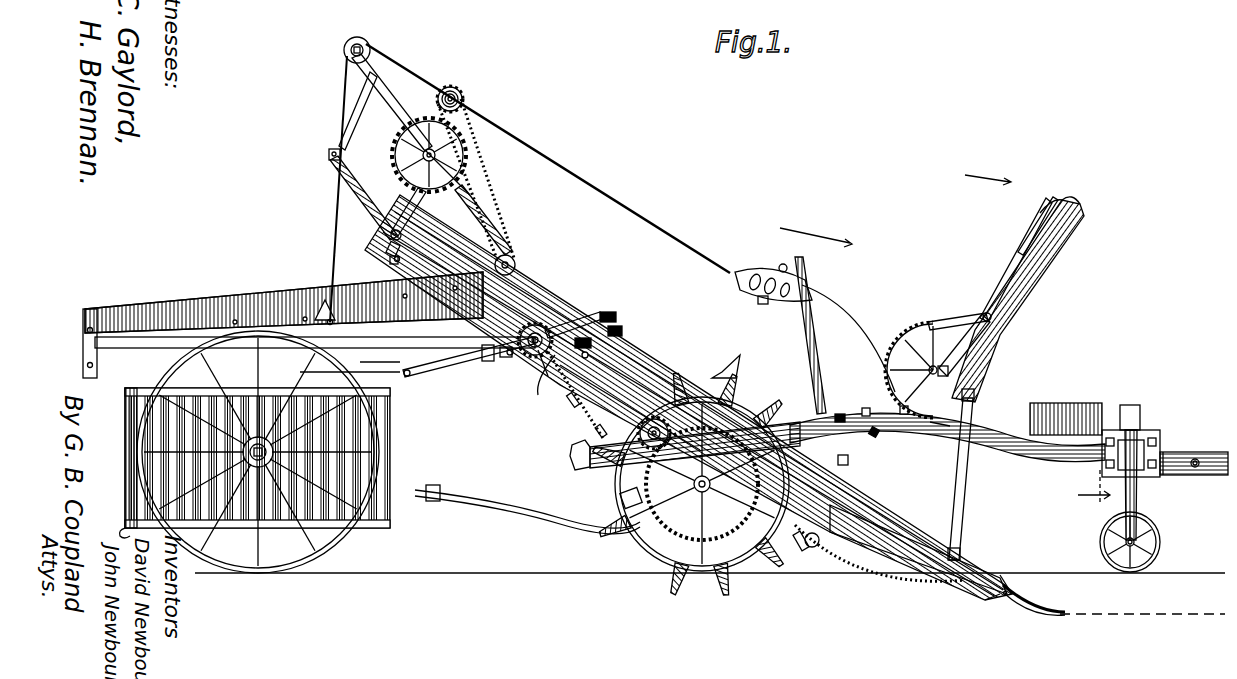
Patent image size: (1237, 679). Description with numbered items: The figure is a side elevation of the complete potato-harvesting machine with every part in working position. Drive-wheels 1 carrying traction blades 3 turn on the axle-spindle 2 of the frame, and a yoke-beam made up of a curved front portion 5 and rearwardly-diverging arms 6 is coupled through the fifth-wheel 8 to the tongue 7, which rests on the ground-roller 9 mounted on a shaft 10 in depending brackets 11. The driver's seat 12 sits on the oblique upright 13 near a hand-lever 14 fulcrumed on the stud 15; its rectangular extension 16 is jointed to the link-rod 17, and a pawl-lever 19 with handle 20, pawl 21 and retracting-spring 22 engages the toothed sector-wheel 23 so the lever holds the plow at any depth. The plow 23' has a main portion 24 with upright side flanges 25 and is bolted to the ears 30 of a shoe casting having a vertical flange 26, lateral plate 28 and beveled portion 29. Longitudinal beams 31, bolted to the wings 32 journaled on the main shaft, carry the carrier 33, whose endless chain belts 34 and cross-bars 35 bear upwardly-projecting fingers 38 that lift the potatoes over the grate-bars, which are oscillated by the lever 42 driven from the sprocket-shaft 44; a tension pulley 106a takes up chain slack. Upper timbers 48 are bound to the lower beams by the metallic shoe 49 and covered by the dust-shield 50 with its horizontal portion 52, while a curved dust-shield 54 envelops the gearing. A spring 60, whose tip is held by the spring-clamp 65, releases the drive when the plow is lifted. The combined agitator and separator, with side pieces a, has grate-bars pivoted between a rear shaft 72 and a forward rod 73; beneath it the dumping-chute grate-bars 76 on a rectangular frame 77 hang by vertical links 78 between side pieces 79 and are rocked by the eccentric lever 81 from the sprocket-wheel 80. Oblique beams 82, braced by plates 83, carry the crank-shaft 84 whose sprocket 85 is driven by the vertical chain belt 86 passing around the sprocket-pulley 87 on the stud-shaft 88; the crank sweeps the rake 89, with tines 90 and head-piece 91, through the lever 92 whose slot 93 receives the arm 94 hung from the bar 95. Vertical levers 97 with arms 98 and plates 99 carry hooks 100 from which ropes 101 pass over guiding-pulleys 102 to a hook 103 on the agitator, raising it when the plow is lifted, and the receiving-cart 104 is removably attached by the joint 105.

The drive-wheels 1 is at (738, 566).
The axle-spindle 2 is at (868, 410).
The traction blades or spurs 3 is at (746, 372).
The curved front portion 5 is at (935, 422).
The rearwardly-diverging arms or prongs 6 is at (808, 435).
The tongue 7 is at (1210, 452).
The fifth-wheel 8 is at (1138, 428).
The ground-roller 9 is at (1162, 540).
The shaft 10 is at (1118, 546).
The depending arms or brackets 11 is at (1138, 498).
The driver's seat 12 is at (760, 270).
The oblique upright 13 is at (854, 345).
The hand-lever 14 is at (1030, 262).
The stud or bracket 15 is at (975, 392).
The rigid rectangular extension 16 is at (962, 384).
The link-rod 17 is at (965, 487).
The pawl-lever 19 is at (1000, 268).
The handle 20 is at (1050, 204).
The pawl 21 is at (936, 324).
The retracting-spring 22 is at (1030, 238).
The toothed sector-wheel 23 is at (911, 370).
The plow or shovel 23' is at (1035, 597).
The main portion 24 is at (1012, 597).
The upright side flanges 25 is at (1008, 578).
The vertical flange 26 is at (962, 545).
The lateral plate 28 is at (975, 548).
The beveled portion 29 is at (990, 590).
The clip or ear 30 is at (1006, 594).
The beam or timber 31 is at (547, 369).
The metal wings or brackets 32 is at (640, 378).
The carrier 33 is at (570, 378).
The endless chain belts 34 is at (880, 568).
The transverse cross-bars 35 is at (540, 392).
The fingers 38 is at (569, 392).
The lever 42 is at (568, 328).
The sprocket-shaft 44 is at (527, 355).
The upper beam or timber 48 is at (462, 246).
The metallic shoe 49 is at (612, 318).
The dust-shield 50 is at (840, 470).
The horizontal portion 52 is at (850, 480).
The curved dust-shield 54 is at (722, 370).
The spring 60 is at (592, 462).
The retaining spring-clamp 65 is at (622, 496).
The transverse shaft 72 is at (83, 350).
The transverse rod 73 is at (503, 358).
The grate-bars 76 is at (455, 366).
The rectangular frame 77 is at (395, 348).
The vertical links 78 is at (412, 337).
The side pieces 79 is at (385, 360).
The sprocket-wheel 80 is at (508, 356).
The eccentric lever 81 is at (486, 362).
The obliquely-upright beams 82 is at (396, 95).
The transverse plates 83 is at (470, 205).
The compound crank-shaft 84 is at (400, 210).
The sprocket-wheel 85 is at (392, 166).
The vertical chain belt 86 is at (484, 169).
The sprocket-pulley 87 is at (464, 98).
The stud-shaft 88 is at (453, 86).
The movable fork or rake 89 is at (412, 268).
The tines or prongs 90 is at (395, 262).
The transverse head-piece 91 is at (402, 252).
The lever 92 is at (356, 198).
The longitudinal slot 93 is at (330, 160).
The rigid arm 94 is at (353, 113).
The bar 95 is at (380, 62).
The vertical levers 97 is at (817, 318).
The obliquely-projecting arms 98 is at (850, 460).
The horizontal plate 99 is at (880, 432).
The cleat or hook 100 is at (768, 304).
The rope or chain 101 is at (341, 97).
The guiding-pulley 102 is at (366, 40).
The hook 103 is at (284, 302).
The side pieces a is at (166, 162).
The receiving-cart 104 is at (390, 423).
The fastening or joint 105 is at (488, 495).
The tension pulley 106a is at (805, 538).